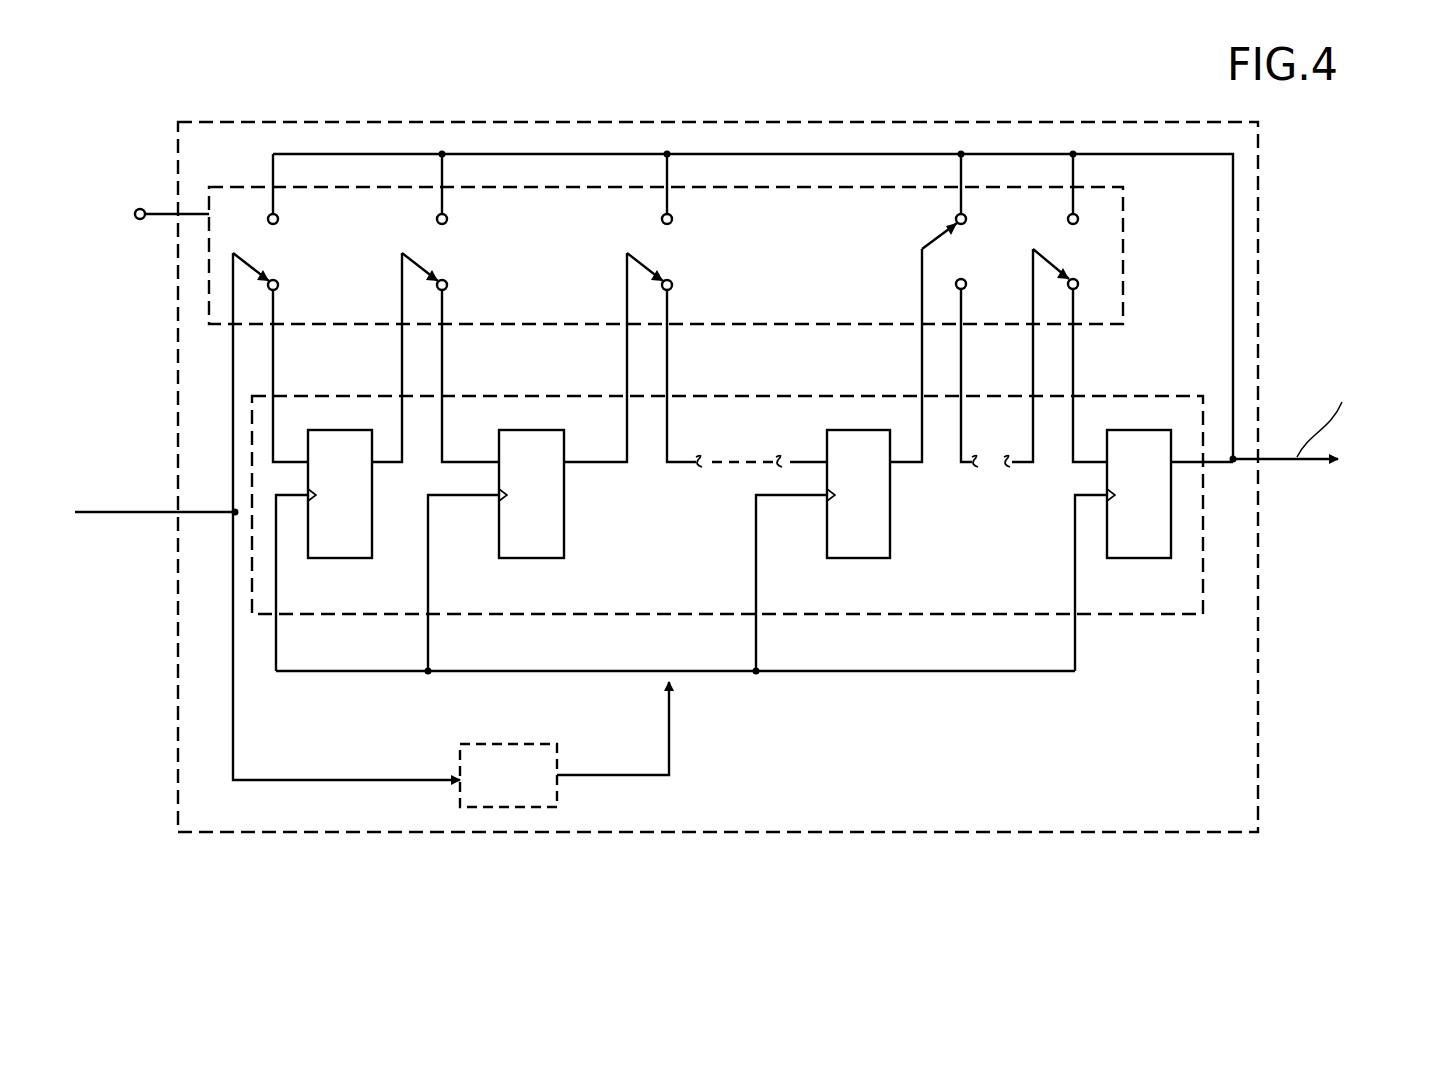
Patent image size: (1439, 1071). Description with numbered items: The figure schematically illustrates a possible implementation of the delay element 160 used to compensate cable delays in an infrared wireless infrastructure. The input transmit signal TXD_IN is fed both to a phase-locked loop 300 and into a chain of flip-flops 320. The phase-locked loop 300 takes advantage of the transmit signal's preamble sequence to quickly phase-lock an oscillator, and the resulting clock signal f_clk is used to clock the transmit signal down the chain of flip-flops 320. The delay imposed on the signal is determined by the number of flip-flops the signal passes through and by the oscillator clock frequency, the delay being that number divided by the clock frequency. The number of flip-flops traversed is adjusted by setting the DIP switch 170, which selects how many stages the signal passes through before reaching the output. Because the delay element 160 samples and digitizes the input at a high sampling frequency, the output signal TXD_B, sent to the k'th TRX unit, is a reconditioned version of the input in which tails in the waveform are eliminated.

The delay element 160 is at (720, 121).
The DIP switch 170 is at (209, 272).
The phase-locked loop (PLL) 300 is at (515, 743).
The chain of flip-flops 320 is at (1097, 614).